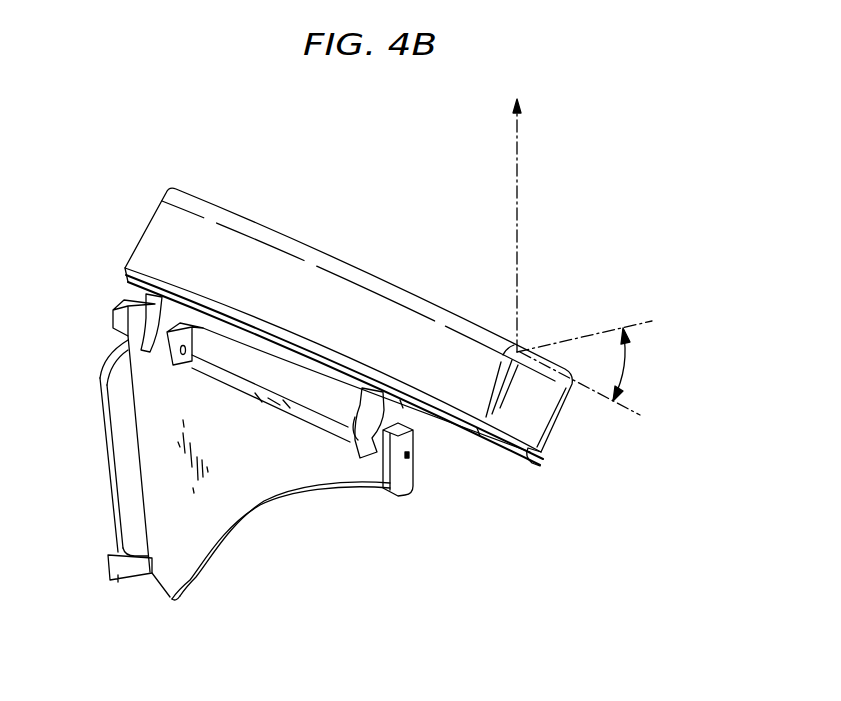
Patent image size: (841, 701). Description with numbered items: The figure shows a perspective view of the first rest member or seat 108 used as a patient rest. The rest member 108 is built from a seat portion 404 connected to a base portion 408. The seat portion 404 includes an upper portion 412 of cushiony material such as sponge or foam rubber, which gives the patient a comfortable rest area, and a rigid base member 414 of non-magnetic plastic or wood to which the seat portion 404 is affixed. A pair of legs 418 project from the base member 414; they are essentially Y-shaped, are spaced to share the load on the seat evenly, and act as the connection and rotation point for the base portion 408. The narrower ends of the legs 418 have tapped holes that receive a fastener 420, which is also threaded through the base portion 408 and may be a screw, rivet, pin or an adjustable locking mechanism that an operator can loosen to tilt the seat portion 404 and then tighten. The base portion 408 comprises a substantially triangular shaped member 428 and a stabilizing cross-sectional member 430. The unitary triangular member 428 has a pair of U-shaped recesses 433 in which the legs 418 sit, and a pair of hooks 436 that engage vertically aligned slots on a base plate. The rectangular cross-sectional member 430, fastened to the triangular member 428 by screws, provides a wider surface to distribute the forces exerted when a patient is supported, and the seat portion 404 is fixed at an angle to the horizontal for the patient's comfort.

The first rest member 108 is at (596, 247).
The seat portion 404 is at (356, 338).
The upper portion 412 is at (232, 265).
The rigid base member 414 is at (536, 464).
The base portion 408 is at (259, 457).
The stabilizing cross-sectional member 430 is at (128, 472).
The hooks 436 is at (112, 320).
The substantially triangular shaped member 428 is at (220, 537).
The legs 418 is at (131, 303).
The U-shaped recesses 433 is at (373, 448).
The fastener 420 is at (407, 456).